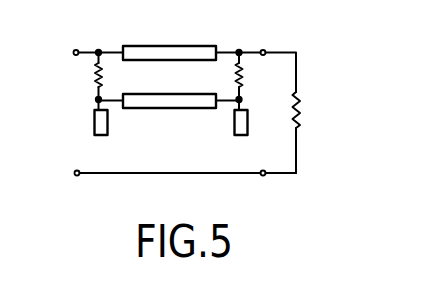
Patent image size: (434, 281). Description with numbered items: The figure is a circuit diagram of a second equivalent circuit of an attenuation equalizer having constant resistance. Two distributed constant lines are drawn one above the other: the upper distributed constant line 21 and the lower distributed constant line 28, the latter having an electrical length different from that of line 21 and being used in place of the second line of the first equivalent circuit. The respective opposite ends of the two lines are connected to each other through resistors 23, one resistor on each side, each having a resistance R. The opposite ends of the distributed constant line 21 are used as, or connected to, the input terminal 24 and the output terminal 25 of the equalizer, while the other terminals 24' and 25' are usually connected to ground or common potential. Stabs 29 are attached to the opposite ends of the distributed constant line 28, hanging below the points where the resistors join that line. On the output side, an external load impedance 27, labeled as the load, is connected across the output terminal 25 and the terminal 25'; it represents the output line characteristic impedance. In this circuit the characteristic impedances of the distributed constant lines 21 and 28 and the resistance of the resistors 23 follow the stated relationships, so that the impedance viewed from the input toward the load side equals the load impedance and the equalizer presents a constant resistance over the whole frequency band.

The distributed constant line 21 is at (167, 46).
The resistor 23 is at (95, 80).
The input terminal 24 is at (56, 34).
The terminal 24' is at (56, 189).
The output terminal 25 is at (284, 37).
The terminal 25' is at (295, 189).
The external load impedance 27 is at (302, 102).
The distributed constant line 28 is at (164, 109).
The stab 29 is at (101, 135).